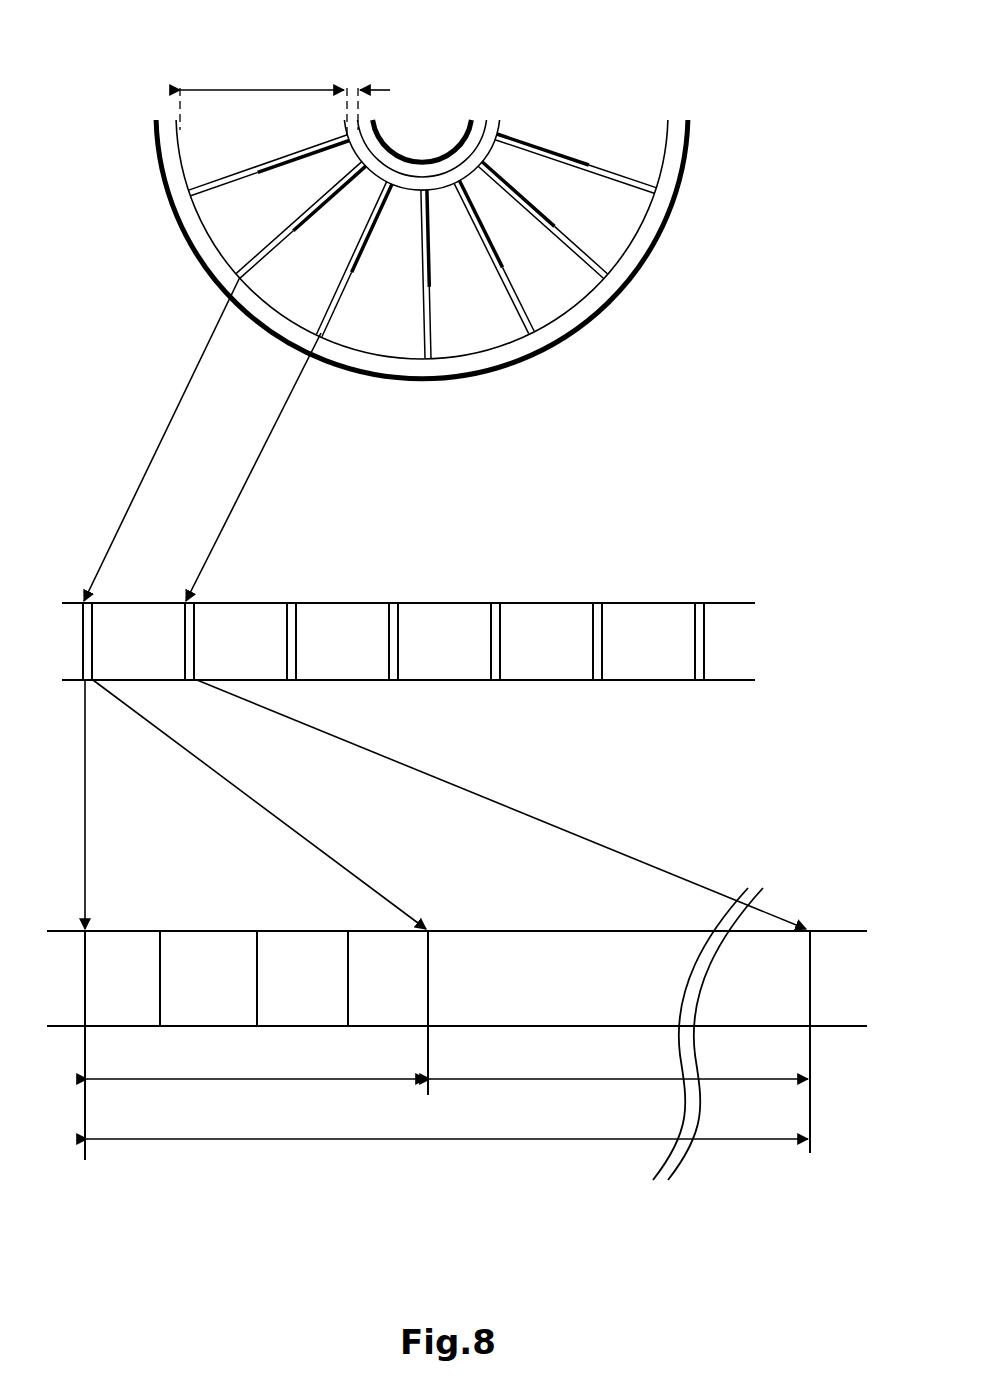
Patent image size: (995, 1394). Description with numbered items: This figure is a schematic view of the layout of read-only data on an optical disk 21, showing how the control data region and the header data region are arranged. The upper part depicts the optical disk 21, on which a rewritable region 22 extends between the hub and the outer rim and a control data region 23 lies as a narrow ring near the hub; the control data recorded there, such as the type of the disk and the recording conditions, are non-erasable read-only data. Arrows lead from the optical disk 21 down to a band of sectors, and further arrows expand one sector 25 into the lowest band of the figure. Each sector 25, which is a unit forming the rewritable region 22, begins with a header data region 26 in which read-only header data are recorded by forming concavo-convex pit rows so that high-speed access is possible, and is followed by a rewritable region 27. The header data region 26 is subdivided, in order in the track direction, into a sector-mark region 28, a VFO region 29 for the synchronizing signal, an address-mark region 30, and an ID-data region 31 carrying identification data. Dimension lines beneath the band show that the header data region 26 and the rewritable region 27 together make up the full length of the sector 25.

The optical disk 21 is at (188, 264).
The rewritable region 22 is at (268, 84).
The control data region 23 is at (353, 80).
The sector 25 is at (447, 1165).
The header data region 26 is at (256, 1103).
The rewritable region 27 is at (619, 1102).
The sector-mark region 28 is at (122, 978).
The VFO region 29 is at (208, 978).
The address-mark region 30 is at (302, 978).
The ID-data region 31 is at (388, 978).